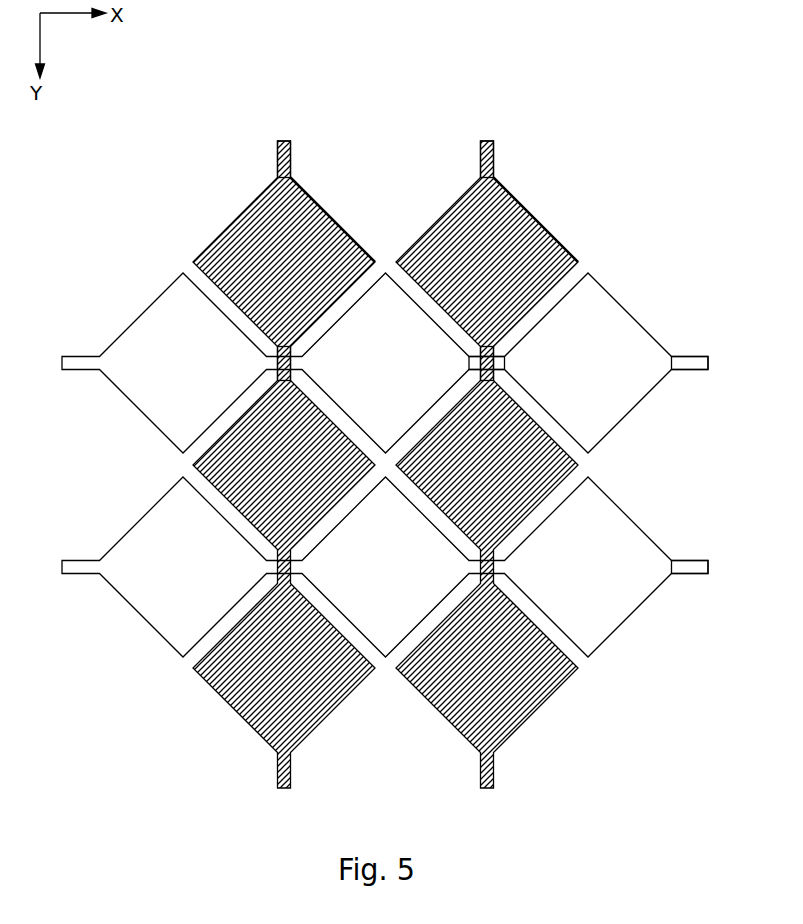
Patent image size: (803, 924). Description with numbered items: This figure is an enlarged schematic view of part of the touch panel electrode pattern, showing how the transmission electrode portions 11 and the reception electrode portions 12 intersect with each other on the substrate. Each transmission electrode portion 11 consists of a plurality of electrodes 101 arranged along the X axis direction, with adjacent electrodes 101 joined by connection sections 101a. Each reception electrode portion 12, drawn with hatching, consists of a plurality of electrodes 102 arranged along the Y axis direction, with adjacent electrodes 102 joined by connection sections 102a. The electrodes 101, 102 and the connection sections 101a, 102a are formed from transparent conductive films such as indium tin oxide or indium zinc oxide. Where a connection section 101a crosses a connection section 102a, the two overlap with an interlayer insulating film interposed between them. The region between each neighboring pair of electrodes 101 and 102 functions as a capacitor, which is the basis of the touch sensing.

The transmission electrode portion 11 is at (688, 352).
The reception electrode portion 12 is at (303, 145).
The electrode 101 is at (604, 288).
The connection section 101a is at (495, 365).
The electrode 102 is at (229, 226).
The connection section 102a is at (292, 349).